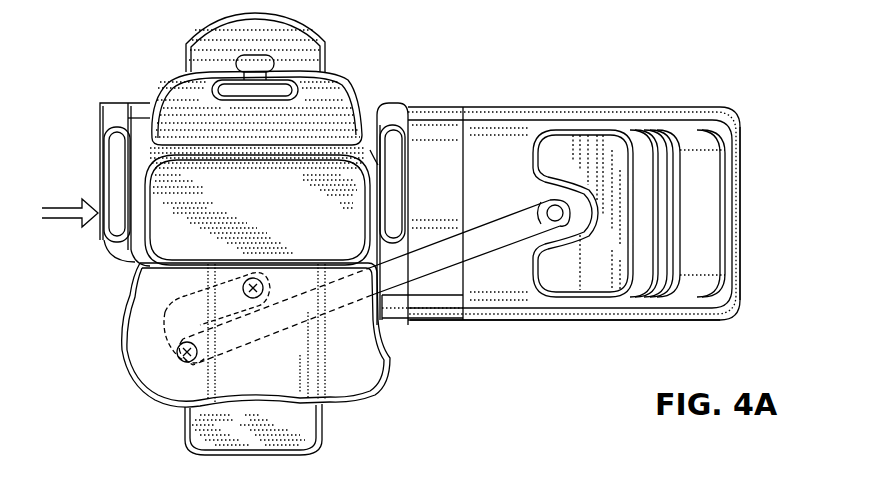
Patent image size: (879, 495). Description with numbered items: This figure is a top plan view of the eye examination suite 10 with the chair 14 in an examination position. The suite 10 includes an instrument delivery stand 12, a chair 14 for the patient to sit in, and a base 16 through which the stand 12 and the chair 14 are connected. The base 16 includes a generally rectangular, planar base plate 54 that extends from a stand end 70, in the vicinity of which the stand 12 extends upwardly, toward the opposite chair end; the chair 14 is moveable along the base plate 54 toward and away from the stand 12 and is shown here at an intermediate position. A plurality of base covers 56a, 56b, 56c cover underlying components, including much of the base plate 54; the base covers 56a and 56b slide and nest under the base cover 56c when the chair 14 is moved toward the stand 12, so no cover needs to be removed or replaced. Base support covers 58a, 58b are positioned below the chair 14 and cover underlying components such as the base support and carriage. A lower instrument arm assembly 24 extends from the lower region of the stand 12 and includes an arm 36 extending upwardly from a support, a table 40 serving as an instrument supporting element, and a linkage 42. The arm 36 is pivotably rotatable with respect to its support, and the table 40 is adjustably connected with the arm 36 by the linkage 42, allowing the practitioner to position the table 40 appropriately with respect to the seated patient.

The eye examination suite 10 is at (72, 62).
The instrument delivery stand 12 is at (662, 131).
The chair 14 is at (170, 80).
The base 16 is at (570, 120).
The lower instrument arm assembly 24 is at (392, 375).
The arm 36 is at (481, 232).
The table 40 is at (256, 359).
The linkage 42 is at (165, 312).
The base plate 54 is at (597, 322).
The base cover 56a is at (496, 132).
The base cover 56b is at (442, 142).
The base cover 56c is at (404, 305).
The base support cover 58a is at (366, 152).
The base support cover 58b is at (122, 248).
The stand end 70 is at (742, 296).